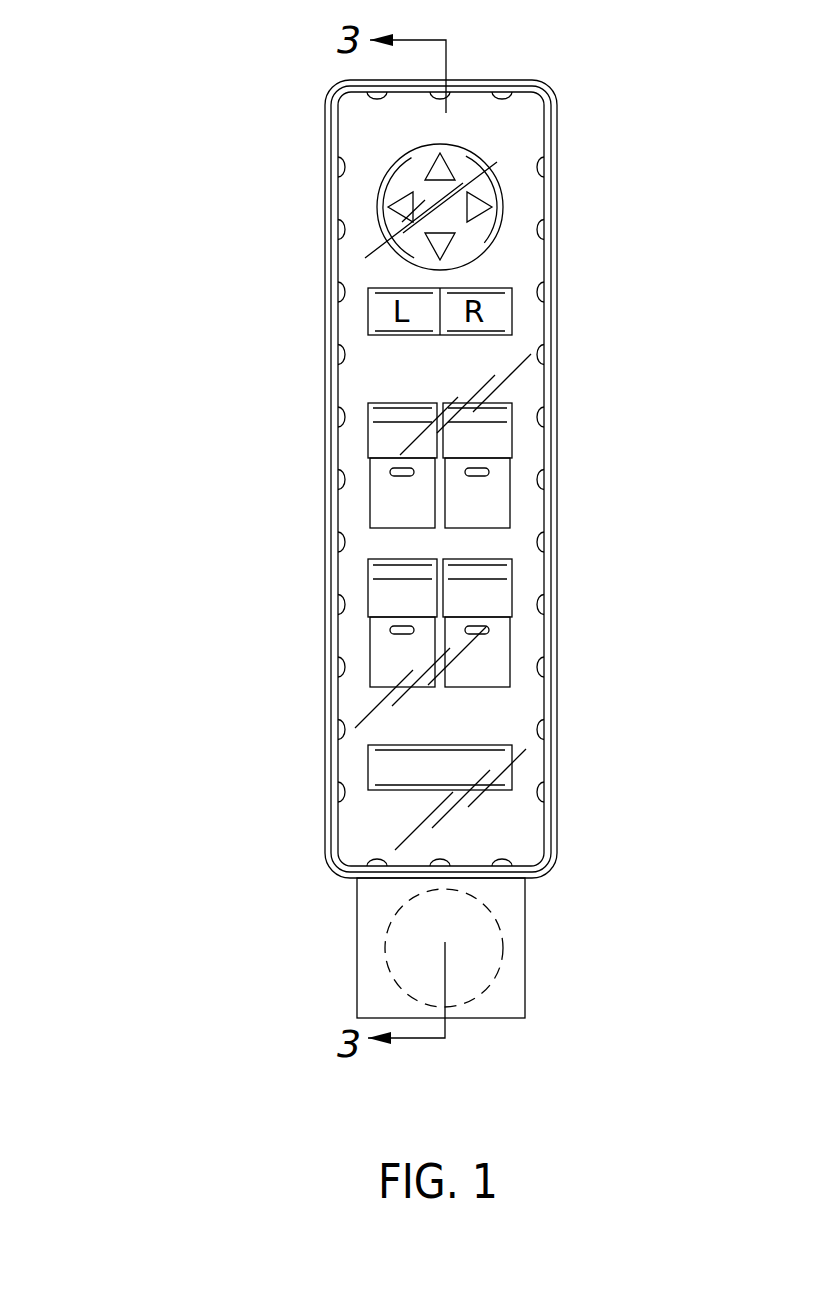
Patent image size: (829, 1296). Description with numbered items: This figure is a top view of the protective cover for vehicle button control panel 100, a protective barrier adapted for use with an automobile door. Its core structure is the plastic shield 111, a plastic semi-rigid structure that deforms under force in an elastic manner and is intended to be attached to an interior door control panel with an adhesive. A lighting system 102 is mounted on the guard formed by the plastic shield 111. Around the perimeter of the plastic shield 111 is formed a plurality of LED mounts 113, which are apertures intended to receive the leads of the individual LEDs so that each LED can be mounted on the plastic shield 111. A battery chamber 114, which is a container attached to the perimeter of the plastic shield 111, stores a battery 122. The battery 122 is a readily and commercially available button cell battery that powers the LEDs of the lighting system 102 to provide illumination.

The protective cover for vehicle button control panel 100 is at (180, 195).
The lighting system 102 is at (533, 273).
The plastic shield 111 is at (522, 143).
The plurality of LED mounts 113 is at (543, 355).
The battery chamber 114 is at (512, 997).
The battery 122 is at (483, 943).